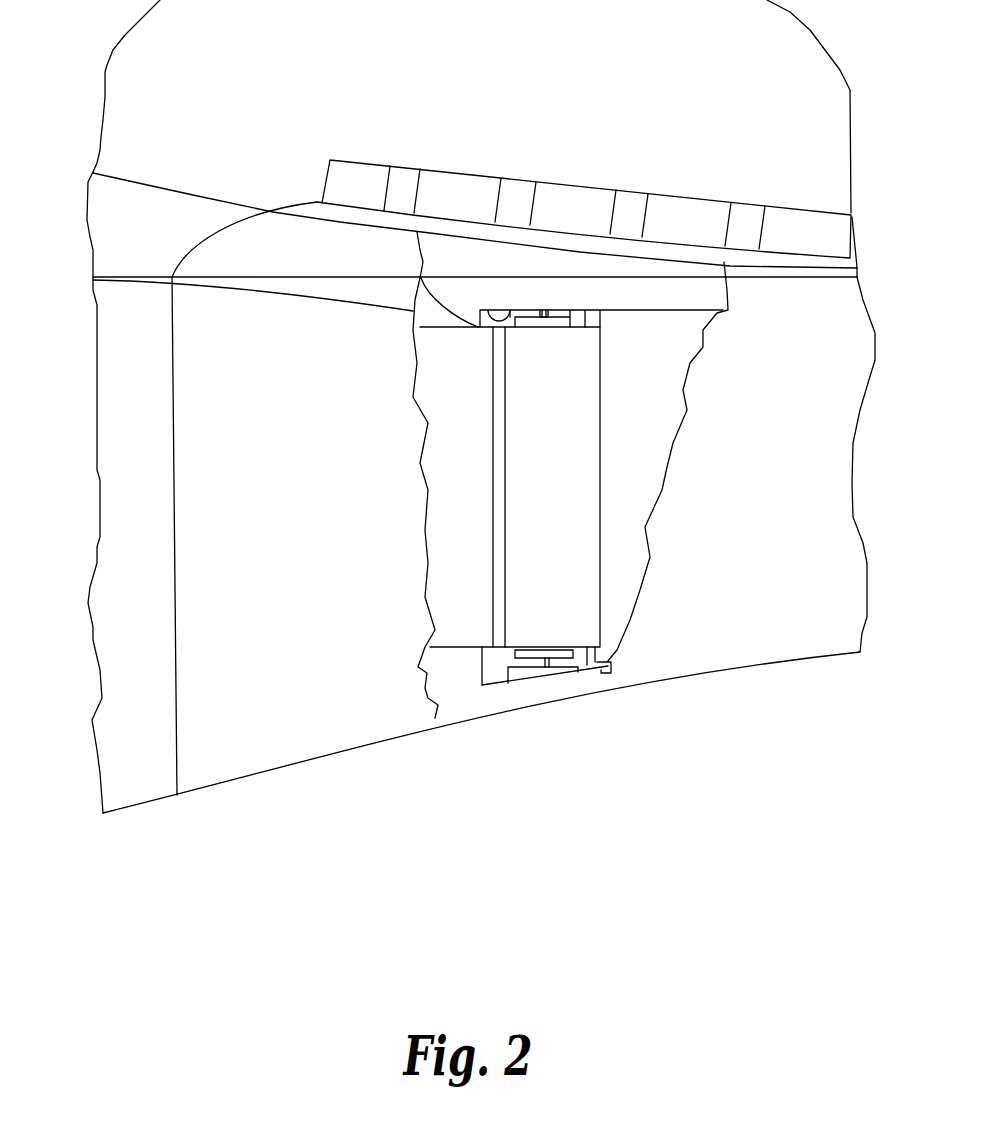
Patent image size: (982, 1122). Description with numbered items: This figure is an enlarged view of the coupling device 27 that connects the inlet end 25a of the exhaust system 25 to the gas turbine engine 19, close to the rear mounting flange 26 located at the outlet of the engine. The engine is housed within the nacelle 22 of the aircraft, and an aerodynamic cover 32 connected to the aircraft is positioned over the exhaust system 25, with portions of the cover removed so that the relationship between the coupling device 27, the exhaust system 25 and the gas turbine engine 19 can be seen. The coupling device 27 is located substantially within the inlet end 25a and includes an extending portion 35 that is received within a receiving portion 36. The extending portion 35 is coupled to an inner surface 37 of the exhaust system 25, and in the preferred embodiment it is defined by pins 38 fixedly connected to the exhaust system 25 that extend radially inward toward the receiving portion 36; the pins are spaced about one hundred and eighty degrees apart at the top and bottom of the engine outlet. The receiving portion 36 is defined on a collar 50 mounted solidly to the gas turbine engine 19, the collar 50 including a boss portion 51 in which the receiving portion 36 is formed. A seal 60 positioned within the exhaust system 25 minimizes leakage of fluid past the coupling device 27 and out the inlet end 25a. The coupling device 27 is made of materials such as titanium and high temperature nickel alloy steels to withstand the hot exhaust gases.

The gas turbine engine 19 is at (452, 543).
The nacelle 22 is at (138, 782).
The exhaust system 25 is at (663, 309).
The inlet end 25a is at (606, 674).
The rear mounting flange 26 is at (483, 662).
The coupling device 27 is at (543, 311).
The aerodynamic cover 32 is at (762, 638).
The extending portion 35 is at (553, 310).
The receiving portion 36 is at (558, 327).
The inner surface 37 is at (488, 310).
The pins 38 is at (541, 311).
The collar 50 is at (556, 645).
The boss portion 51 is at (527, 653).
The seal 60 is at (608, 662).